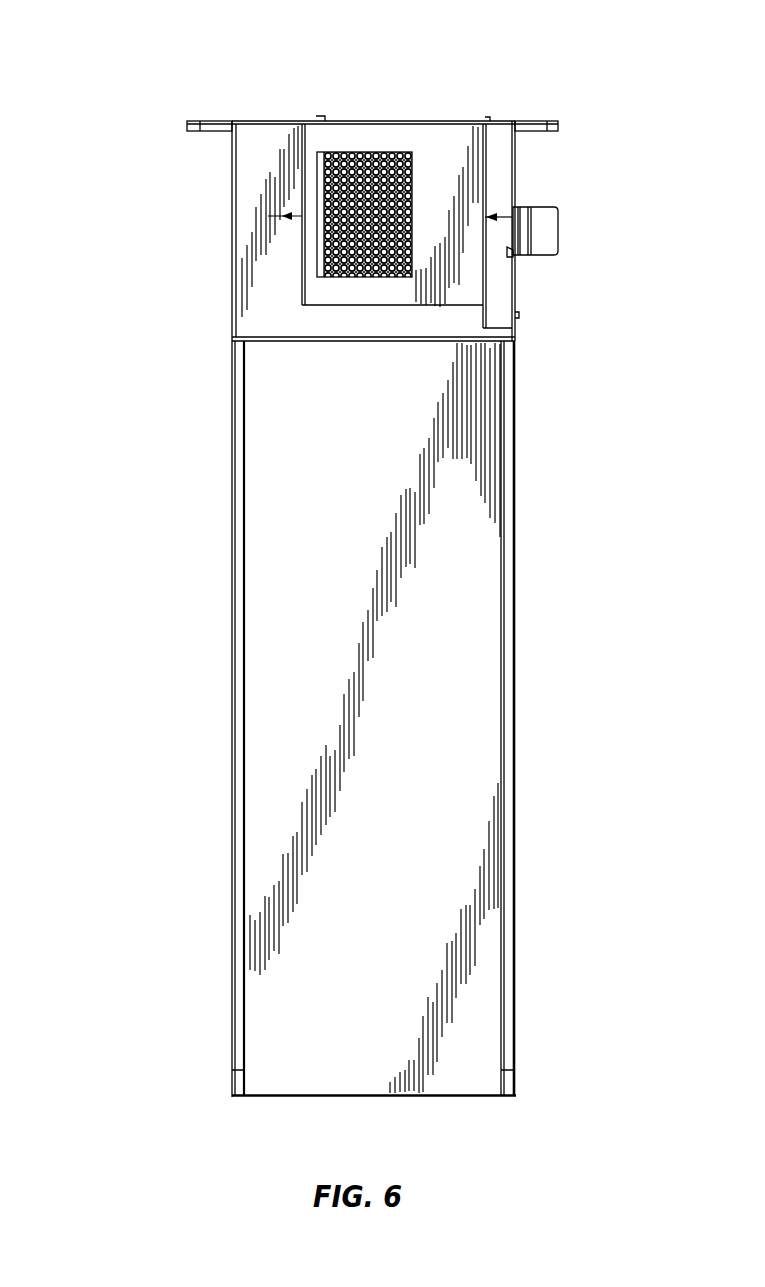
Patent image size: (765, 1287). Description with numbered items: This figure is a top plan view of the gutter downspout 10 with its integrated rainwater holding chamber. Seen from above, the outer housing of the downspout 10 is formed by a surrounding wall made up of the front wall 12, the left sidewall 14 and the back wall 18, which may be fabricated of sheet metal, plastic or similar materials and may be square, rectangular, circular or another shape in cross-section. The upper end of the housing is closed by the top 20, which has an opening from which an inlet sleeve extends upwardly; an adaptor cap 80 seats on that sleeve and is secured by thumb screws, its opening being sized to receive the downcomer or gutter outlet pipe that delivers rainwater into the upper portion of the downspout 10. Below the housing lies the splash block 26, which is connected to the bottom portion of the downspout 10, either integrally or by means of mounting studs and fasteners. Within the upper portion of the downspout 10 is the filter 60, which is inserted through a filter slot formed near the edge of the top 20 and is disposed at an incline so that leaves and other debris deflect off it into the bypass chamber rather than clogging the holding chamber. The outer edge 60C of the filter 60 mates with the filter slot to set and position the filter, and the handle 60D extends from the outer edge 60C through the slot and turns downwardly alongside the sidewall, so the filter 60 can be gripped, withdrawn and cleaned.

The downspout 10 is at (146, 456).
The front wall 12 is at (323, 342).
The left sidewall 14 is at (232, 203).
The back wall 18 is at (282, 122).
The top 20 is at (275, 285).
The splash block 26 is at (425, 627).
The filter 60 is at (383, 191).
The outer edge 60C is at (515, 182).
The handle 60D is at (558, 230).
The adaptor cap 80 is at (438, 183).